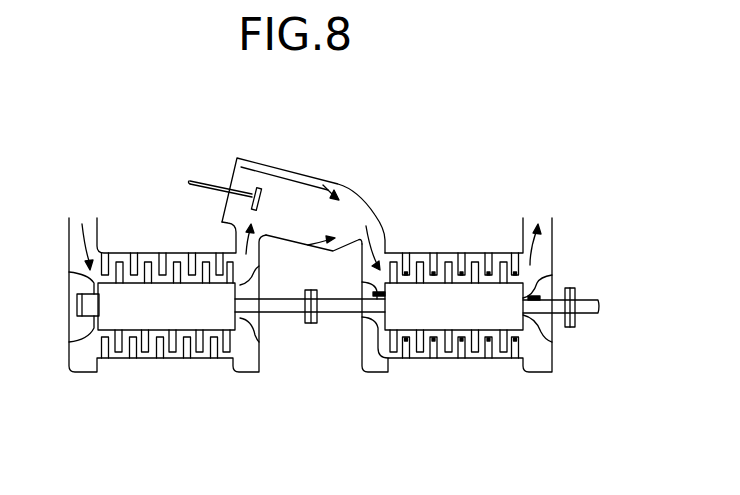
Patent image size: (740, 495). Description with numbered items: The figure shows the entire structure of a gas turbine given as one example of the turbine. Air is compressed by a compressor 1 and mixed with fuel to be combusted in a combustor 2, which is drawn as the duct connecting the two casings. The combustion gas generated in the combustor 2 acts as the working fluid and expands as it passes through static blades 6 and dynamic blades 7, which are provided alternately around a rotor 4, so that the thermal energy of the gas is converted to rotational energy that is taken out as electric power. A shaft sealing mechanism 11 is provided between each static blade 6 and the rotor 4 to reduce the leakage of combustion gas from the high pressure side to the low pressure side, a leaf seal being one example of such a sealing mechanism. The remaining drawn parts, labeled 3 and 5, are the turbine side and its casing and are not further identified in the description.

The compressor 1 is at (262, 392).
The combustor 2 is at (403, 147).
The second turbine 3 is at (480, 322).
The rotor 4 is at (340, 314).
The turbine casing 5 is at (421, 358).
The static blades 6 is at (460, 258).
The dynamic blades 7 is at (474, 262).
The shaft sealing mechanism 11 is at (463, 284).